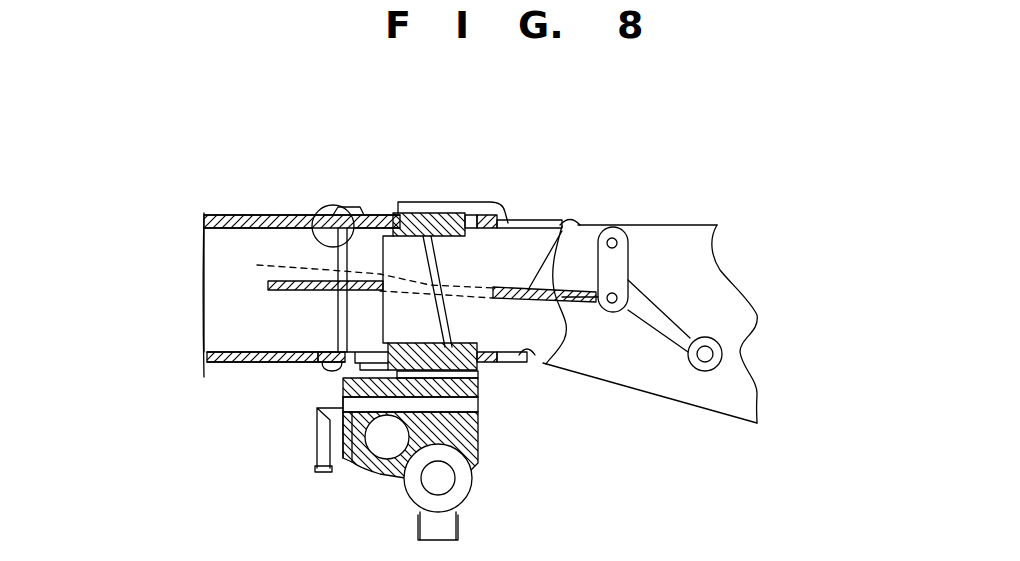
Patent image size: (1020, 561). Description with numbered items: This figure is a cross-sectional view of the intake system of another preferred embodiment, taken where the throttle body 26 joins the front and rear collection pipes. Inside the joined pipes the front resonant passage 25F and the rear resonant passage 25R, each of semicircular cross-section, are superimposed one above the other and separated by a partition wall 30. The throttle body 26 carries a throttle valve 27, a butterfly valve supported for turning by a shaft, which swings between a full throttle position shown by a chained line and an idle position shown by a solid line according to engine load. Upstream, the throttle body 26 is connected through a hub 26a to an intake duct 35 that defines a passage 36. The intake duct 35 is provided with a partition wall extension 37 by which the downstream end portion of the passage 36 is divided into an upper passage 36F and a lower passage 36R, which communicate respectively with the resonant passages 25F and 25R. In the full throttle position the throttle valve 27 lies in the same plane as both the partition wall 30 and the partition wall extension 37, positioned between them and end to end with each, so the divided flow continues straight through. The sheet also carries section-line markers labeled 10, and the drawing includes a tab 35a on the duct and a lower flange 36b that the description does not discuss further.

The section line X-X indicator 10 is at (155, 293).
The front resonant passage 25F is at (525, 222).
The rear resonant passage 25R is at (535, 362).
The throttle body 26 is at (411, 204).
The hub 26a is at (313, 222).
The throttle valve 27 is at (425, 254).
The partition wall 30 is at (583, 223).
The intake duct 35 is at (232, 363).
The tube tab 35a is at (340, 215).
The passage 36 is at (204, 214).
The upper passage 36F is at (302, 191).
The lower passage 36R is at (274, 323).
The tube bottom flange 36b is at (345, 333).
The partition wall extension 37 is at (300, 291).